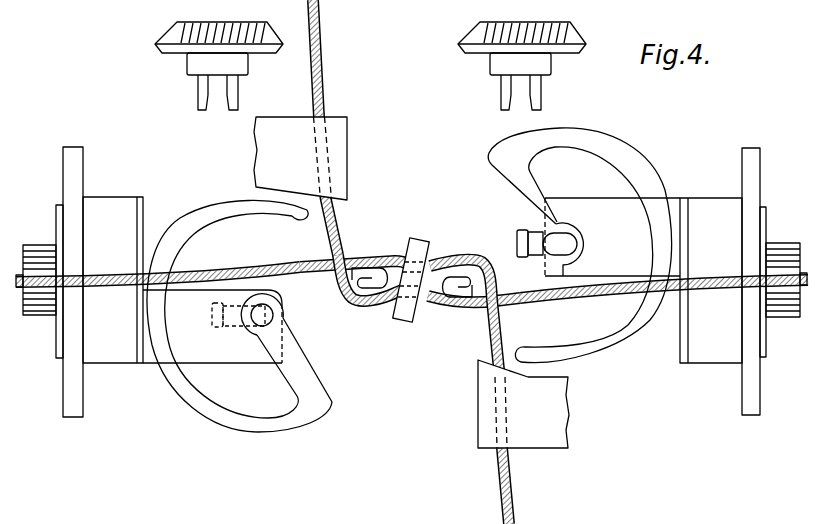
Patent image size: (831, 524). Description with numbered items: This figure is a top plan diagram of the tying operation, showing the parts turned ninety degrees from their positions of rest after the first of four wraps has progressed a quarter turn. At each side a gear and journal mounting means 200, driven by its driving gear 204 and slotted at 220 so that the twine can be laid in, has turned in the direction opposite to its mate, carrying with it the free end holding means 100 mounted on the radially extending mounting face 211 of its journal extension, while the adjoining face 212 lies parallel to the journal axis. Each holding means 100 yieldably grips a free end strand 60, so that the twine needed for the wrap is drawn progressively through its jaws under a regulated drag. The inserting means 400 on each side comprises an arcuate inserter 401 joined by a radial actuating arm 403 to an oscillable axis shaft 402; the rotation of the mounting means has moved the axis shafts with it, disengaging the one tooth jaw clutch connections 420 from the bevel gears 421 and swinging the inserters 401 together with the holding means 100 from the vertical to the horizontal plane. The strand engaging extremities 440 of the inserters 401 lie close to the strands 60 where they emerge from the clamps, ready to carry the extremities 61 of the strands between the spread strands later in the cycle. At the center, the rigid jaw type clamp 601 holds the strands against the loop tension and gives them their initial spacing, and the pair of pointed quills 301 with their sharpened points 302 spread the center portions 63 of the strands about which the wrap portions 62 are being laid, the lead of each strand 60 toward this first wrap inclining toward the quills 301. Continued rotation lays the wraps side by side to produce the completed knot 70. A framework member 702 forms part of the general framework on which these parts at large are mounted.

The free end strands 60 is at (337, 220).
The extremities 61 is at (323, 58).
The wraps 62 is at (348, 302).
The center portions 63 is at (310, 258).
The completed knot 70 is at (412, 279).
The free end holding means 100 is at (416, 282).
The gear and journal mounting means 200 is at (742, 189).
The driving gear 204 is at (43, 320).
The mounting face 211 is at (411, 280).
The axially parallel face 212 is at (279, 291).
The slots 220 is at (107, 270).
The quills 301 is at (351, 264).
The sharpened points 302 is at (391, 262).
The inserting means 400 is at (409, 284).
The arcuate inserters 401 is at (192, 401).
The axis shaft 402 is at (233, 300).
The actuating arm 403 is at (303, 360).
The one tooth jaw clutch connections 420 is at (198, 95).
The bevel gears 421 is at (164, 34).
The strand engaging extremities 440 is at (300, 214).
The rigid jaw type clamp 601 is at (414, 239).
The side plate 702 is at (68, 417).